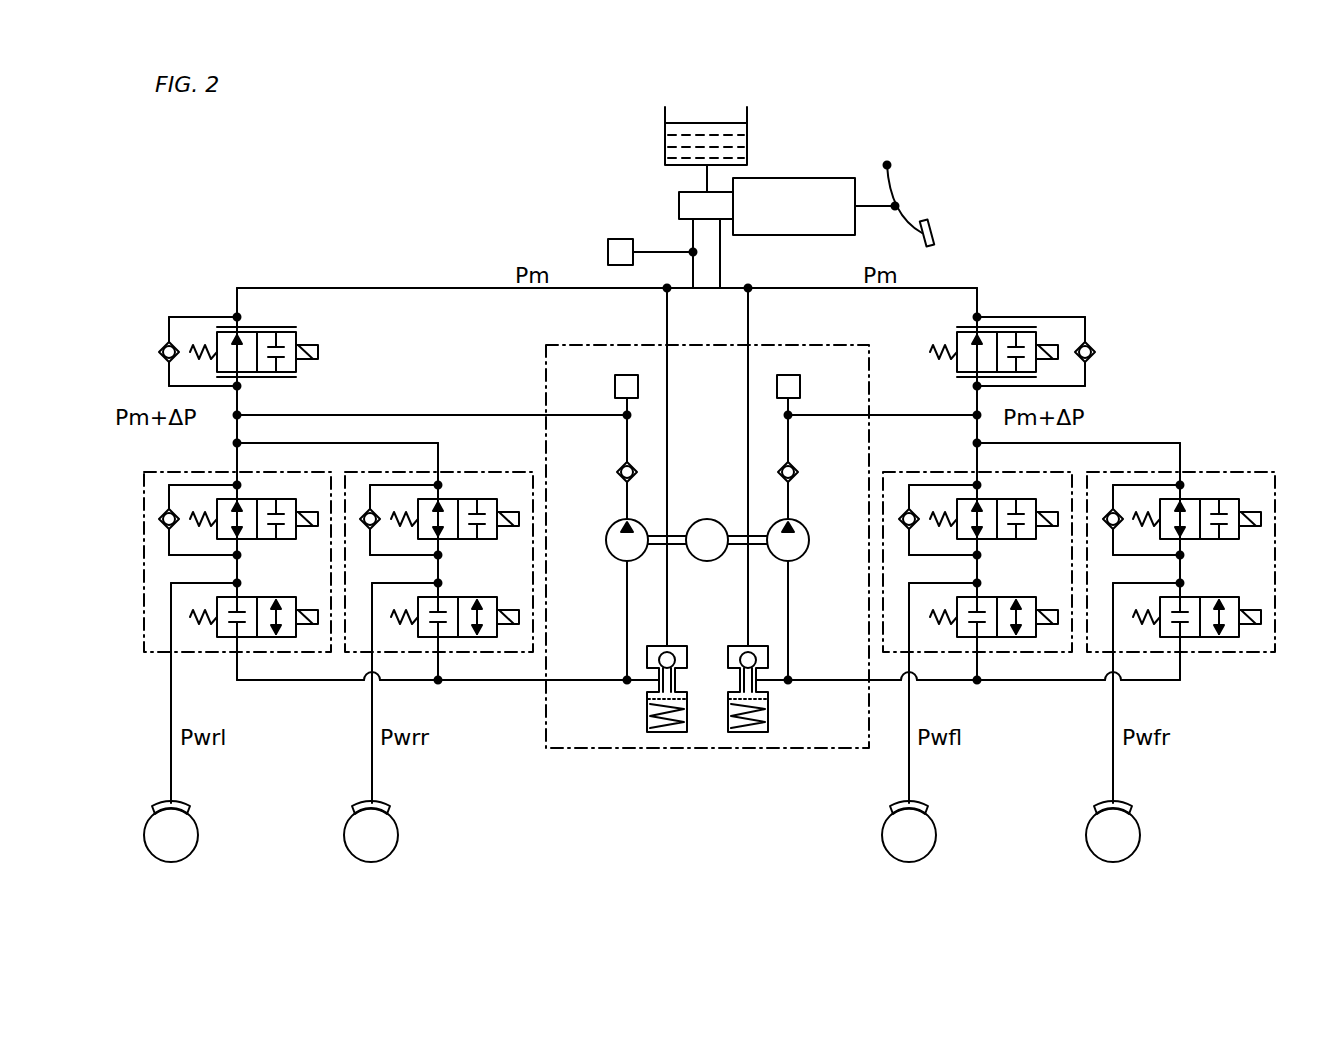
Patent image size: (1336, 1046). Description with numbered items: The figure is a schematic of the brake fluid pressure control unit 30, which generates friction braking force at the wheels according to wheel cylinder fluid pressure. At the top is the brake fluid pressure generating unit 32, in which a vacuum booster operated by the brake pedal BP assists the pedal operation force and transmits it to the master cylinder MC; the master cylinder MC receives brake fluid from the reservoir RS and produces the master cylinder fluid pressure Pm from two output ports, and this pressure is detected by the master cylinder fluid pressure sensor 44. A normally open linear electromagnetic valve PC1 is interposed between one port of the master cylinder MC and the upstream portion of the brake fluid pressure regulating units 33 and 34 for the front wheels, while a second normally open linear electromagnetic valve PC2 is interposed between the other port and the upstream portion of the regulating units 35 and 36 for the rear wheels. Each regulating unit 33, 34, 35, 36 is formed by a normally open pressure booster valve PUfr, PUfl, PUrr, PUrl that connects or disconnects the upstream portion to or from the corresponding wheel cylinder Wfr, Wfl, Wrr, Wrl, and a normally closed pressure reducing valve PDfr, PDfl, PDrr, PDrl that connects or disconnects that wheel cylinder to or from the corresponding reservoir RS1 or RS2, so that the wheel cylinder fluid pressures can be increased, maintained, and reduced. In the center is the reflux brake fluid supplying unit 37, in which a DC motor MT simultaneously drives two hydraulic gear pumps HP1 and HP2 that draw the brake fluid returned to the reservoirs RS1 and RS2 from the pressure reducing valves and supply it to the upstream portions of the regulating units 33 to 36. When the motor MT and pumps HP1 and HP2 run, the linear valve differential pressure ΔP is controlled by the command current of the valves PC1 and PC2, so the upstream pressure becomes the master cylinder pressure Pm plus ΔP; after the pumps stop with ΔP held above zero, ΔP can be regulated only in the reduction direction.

The brake fluid pressure control unit 30 is at (803, 158).
The brake fluid pressure generating unit 32 is at (856, 170).
The brake fluid pressure regulating unit 33 is at (1181, 549).
The brake fluid pressure regulating unit 34 is at (977, 549).
The brake fluid pressure regulating unit 35 is at (439, 549).
The brake fluid pressure regulating unit 36 is at (237, 549).
The reflux brake fluid supplying unit 37 is at (707, 559).
The master cylinder fluid pressure sensor 44 is at (608, 252).
The reservoir RS is at (747, 150).
The master cylinder MC is at (679, 206).
The brake pedal BP is at (934, 236).
The normally open linear electromagnetic valve PC1 is at (962, 332).
The normally open linear electromagnetic valve PC2 is at (290, 332).
The pressure booster valve PUrl is at (252, 499).
The pressure reducing valve PDrl is at (252, 597).
The pressure booster valve PUrr is at (453, 499).
The pressure reducing valve PDrr is at (453, 597).
The pressure booster valve PUfl is at (992, 499).
The pressure reducing valve PDfl is at (992, 597).
The pressure booster valve PUfr is at (1196, 499).
The pressure reducing valve PDfr is at (1196, 597).
The hydraulic pump HP1 is at (796, 558).
The hydraulic pump HP2 is at (620, 558).
The DC motor MT is at (707, 562).
The reservoir RS1 is at (768, 718).
The reservoir RS2 is at (647, 718).
The wheel cylinder Wrl is at (160, 805).
The wheel cylinder Wrr is at (384, 805).
The wheel cylinder Wfl is at (922, 805).
The wheel cylinder Wfr is at (1126, 805).